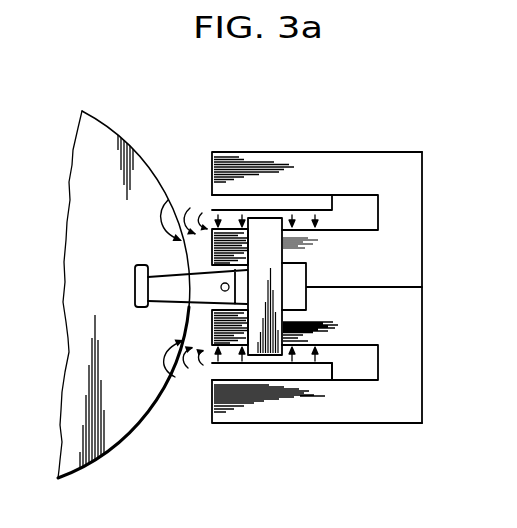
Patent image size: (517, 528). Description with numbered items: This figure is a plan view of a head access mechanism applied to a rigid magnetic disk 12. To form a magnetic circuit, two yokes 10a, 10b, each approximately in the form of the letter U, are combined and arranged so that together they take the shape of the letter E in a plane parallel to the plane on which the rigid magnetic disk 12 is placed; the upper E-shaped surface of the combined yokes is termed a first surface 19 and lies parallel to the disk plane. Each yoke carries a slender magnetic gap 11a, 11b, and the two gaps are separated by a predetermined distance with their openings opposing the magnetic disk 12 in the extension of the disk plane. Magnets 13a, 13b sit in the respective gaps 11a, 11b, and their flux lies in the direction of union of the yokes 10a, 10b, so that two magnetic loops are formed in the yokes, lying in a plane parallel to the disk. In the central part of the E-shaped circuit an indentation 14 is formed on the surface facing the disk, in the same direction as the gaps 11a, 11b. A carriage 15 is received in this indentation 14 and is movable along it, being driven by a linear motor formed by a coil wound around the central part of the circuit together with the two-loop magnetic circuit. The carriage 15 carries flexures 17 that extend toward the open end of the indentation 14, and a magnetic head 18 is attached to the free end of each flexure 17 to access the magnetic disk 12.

The yoke 10a is at (417, 198).
The yoke 10b is at (413, 335).
The magnetic gap 11a is at (320, 222).
The magnetic gap 11b is at (363, 373).
The rigid magnetic disk 12 is at (110, 209).
The magnet 13a is at (292, 201).
The magnet 13b is at (297, 372).
The indentation 14 is at (297, 263).
The carriage 15 is at (248, 283).
The flexures 17 is at (167, 292).
The magnetic heads 18 is at (137, 271).
The first surface 19 is at (415, 255).